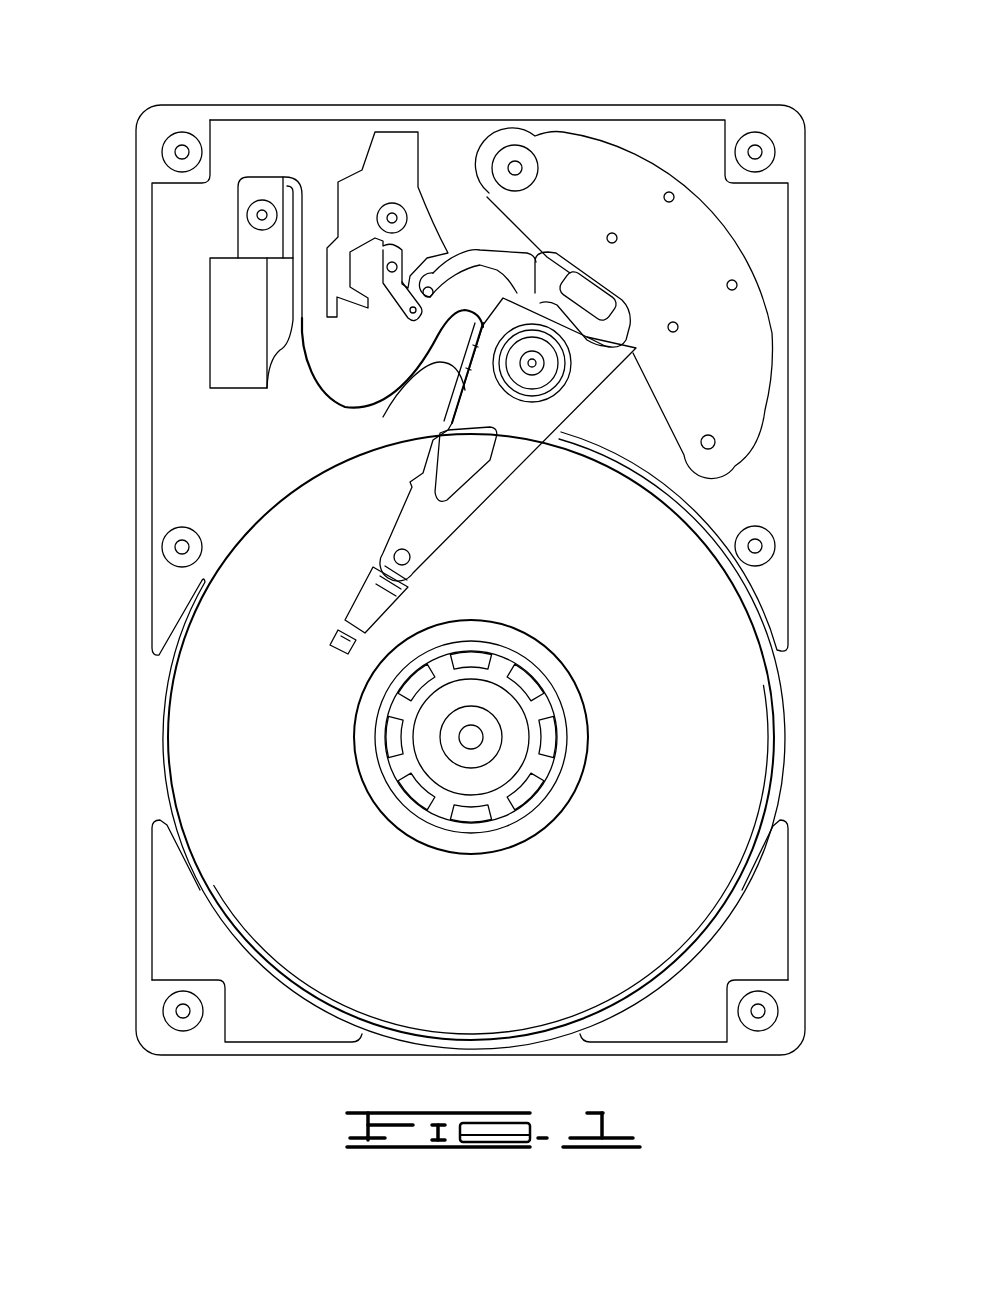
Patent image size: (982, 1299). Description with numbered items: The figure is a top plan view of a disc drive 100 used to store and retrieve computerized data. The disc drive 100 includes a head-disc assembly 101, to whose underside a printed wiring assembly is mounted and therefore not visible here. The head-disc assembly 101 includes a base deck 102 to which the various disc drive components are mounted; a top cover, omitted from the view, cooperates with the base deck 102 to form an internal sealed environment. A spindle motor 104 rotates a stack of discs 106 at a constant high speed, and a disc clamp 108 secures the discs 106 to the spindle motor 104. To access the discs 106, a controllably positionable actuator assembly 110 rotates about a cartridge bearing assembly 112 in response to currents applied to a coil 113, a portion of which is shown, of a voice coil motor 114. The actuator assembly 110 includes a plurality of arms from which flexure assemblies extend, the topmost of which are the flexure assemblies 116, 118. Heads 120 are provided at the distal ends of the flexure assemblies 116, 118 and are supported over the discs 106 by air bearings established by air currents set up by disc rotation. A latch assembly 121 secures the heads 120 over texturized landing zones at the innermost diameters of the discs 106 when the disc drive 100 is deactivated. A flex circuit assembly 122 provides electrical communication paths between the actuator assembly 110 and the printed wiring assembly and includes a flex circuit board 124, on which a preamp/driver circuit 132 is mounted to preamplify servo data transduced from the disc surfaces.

The disc drive 100 is at (246, 90).
The head-disc assembly 101 is at (134, 228).
The base deck 102 is at (227, 452).
The spindle motor 104 is at (480, 763).
The discs 106 is at (703, 822).
The disc clamp 108 is at (375, 783).
The actuator assembly 110 is at (540, 377).
The cartridge bearing assembly 112 is at (508, 432).
The coil 113 is at (618, 322).
The voice coil motor 114 is at (567, 203).
The flexure assembly 116 is at (412, 532).
The flexure assembly 118 is at (363, 612).
The heads 120 is at (338, 642).
The latch assembly 121 is at (393, 153).
The flex circuit assembly 122 is at (331, 414).
The flex circuit board 124 is at (447, 421).
The preamp/driver circuit 132 is at (406, 400).